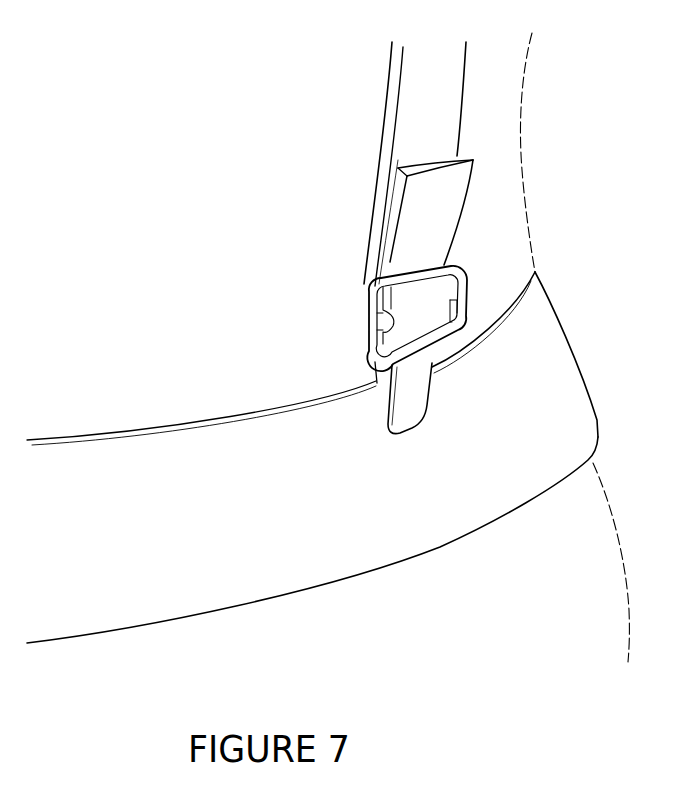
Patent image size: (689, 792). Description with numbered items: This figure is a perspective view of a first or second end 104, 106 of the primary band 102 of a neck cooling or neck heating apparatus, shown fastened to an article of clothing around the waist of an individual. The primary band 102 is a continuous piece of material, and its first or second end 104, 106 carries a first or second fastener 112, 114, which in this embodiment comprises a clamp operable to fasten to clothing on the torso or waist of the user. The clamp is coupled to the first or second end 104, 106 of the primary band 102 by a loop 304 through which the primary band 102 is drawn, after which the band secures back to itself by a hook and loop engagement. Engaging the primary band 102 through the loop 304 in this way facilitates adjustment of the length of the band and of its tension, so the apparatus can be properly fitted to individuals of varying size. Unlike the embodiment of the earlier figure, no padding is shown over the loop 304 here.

The primary band 102 is at (386, 113).
The first end 104 is at (507, 212).
The second end 106 is at (457, 182).
The loop 304 is at (463, 300).
The first fastener 112 is at (339, 421).
The second fastener 114 is at (385, 420).